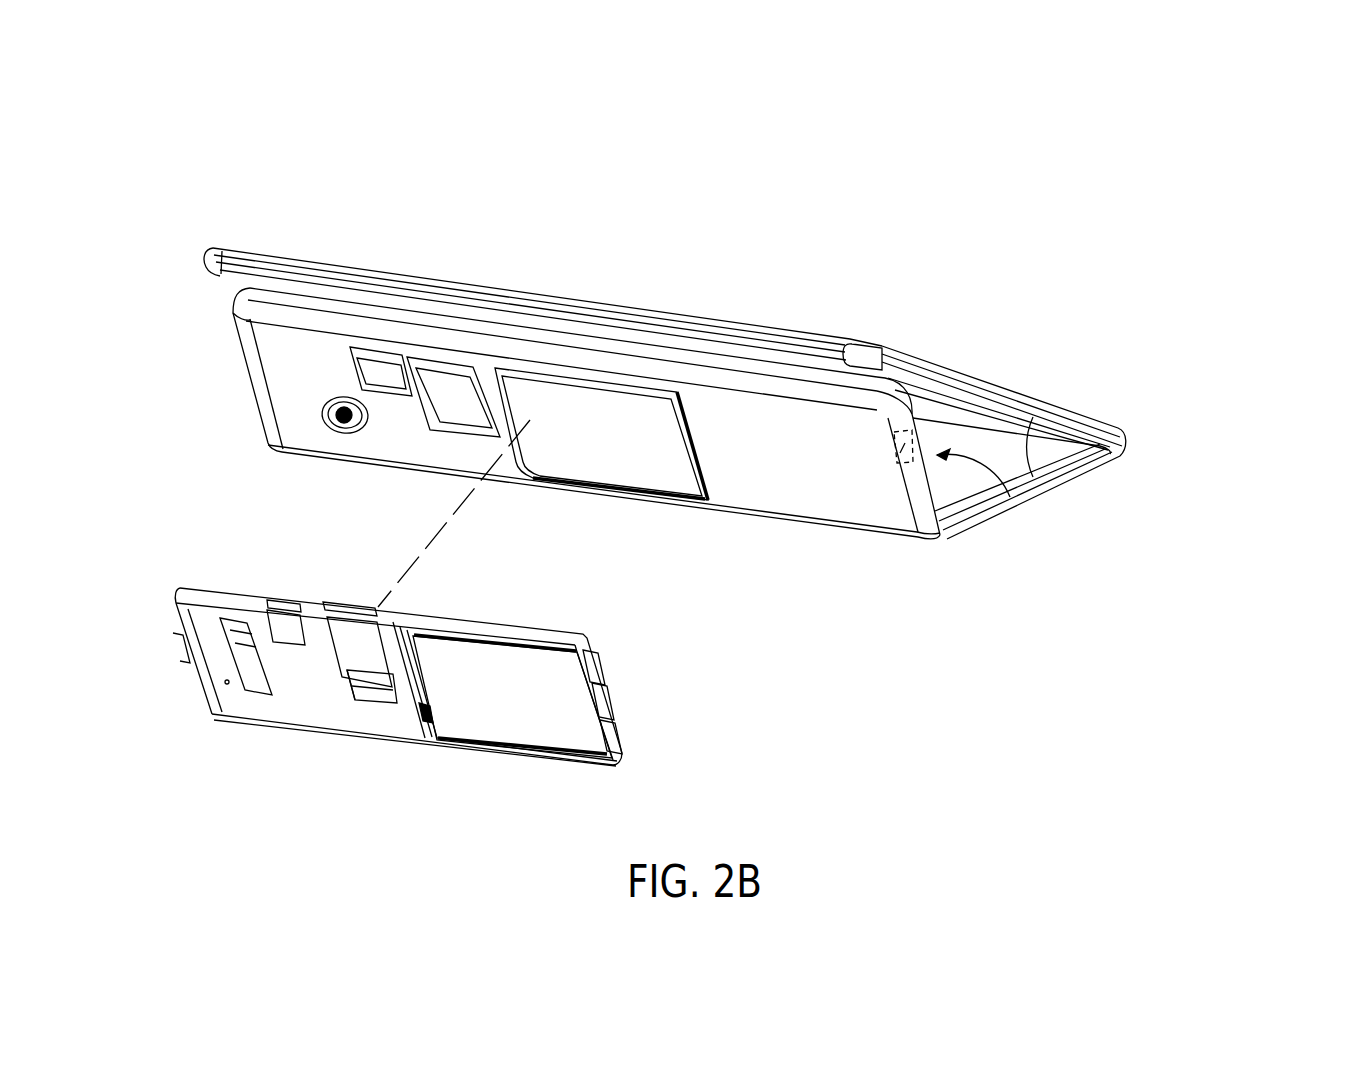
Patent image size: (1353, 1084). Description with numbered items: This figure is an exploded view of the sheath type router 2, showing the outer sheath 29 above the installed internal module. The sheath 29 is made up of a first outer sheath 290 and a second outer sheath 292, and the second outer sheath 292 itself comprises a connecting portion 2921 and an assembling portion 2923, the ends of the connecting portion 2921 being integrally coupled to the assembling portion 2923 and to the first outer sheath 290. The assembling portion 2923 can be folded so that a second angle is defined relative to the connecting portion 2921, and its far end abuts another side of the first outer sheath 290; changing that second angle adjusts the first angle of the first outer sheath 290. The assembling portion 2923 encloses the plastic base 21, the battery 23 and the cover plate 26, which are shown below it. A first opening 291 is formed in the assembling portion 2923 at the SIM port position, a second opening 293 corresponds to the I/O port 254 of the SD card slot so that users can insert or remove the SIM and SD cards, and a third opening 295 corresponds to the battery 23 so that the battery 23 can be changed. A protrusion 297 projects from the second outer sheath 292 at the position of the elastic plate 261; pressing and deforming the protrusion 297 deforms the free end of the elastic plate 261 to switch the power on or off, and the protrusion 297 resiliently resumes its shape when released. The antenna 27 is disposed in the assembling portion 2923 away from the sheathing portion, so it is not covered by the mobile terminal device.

The sheath type router 2 is at (1015, 198).
The plastic base 21 is at (525, 630).
The battery 23 is at (510, 732).
The cover plate 26 is at (372, 717).
The elastic plate 261 is at (255, 685).
The I/O port 254 is at (180, 650).
The antenna 27 is at (893, 465).
The sheath 29 is at (1180, 357).
The first outer sheath 290 is at (1013, 400).
The first opening 291 is at (372, 348).
The second opening 293 is at (441, 362).
The third opening 295 is at (710, 490).
The protrusion 297 is at (355, 427).
The second outer sheath 292 is at (1127, 527).
The connecting portion 2921 is at (1050, 477).
The assembling portion 2923 is at (893, 513).